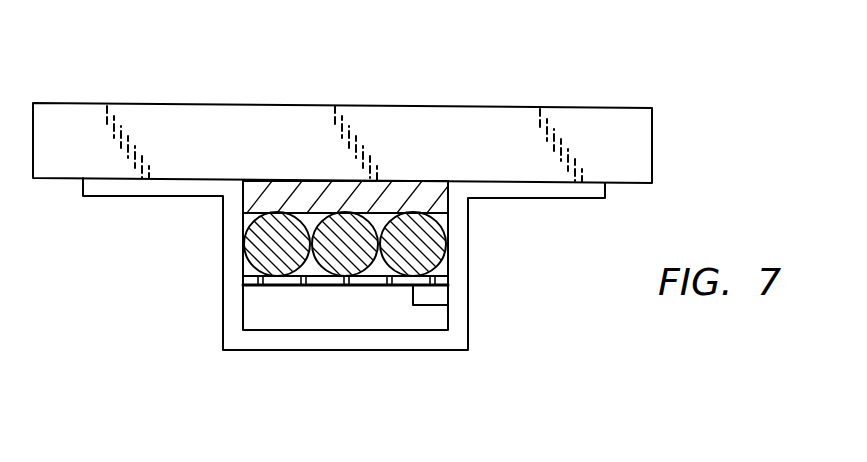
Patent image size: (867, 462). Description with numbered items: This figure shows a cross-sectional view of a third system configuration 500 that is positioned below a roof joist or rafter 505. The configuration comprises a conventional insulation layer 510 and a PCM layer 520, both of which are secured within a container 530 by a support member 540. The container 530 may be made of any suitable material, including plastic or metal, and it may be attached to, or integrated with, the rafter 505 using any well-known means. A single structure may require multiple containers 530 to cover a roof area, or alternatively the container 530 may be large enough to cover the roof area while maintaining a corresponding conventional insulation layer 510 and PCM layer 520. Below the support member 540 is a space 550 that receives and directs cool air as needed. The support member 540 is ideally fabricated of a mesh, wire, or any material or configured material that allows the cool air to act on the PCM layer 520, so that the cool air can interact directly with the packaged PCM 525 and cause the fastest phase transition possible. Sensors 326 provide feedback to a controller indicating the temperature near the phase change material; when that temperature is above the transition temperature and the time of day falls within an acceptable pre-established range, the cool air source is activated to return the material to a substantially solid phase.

The third system configuration 500 is at (694, 106).
The roof joist or rafter 505 is at (637, 157).
The conventional insulation layer 510 is at (288, 190).
The PCM layer 520 is at (245, 265).
The packaged PCM 525 is at (443, 245).
The container 530 is at (230, 350).
The support member 540 is at (300, 293).
The space 550 is at (438, 323).
The sensors 326 is at (425, 310).